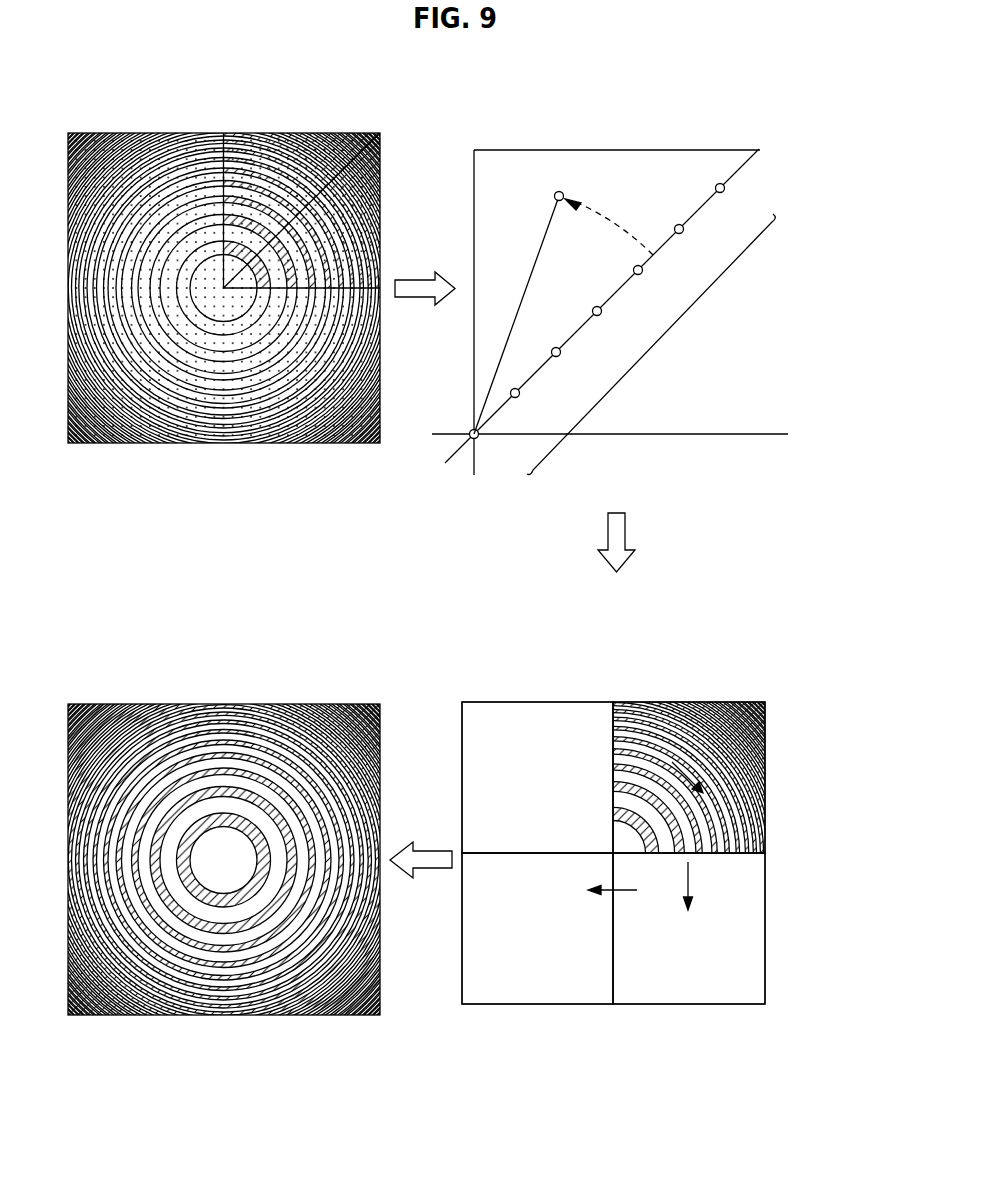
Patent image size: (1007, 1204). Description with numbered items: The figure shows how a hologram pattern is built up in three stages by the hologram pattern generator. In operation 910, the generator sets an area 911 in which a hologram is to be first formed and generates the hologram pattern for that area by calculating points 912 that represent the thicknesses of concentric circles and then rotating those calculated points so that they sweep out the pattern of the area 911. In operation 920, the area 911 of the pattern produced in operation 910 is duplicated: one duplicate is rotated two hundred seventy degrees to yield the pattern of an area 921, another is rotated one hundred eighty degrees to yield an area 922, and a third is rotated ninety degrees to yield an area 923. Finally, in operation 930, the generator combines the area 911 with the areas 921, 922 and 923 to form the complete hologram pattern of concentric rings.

The operation of setting an area 910 is at (252, 92).
The area 911 is at (590, 92).
The points 912 is at (653, 347).
The operation of duplicating the area 920 is at (642, 662).
The area 921 is at (685, 983).
The area 922 is at (535, 983).
The area 923 is at (512, 723).
The operation of combining the areas 930 is at (252, 662).